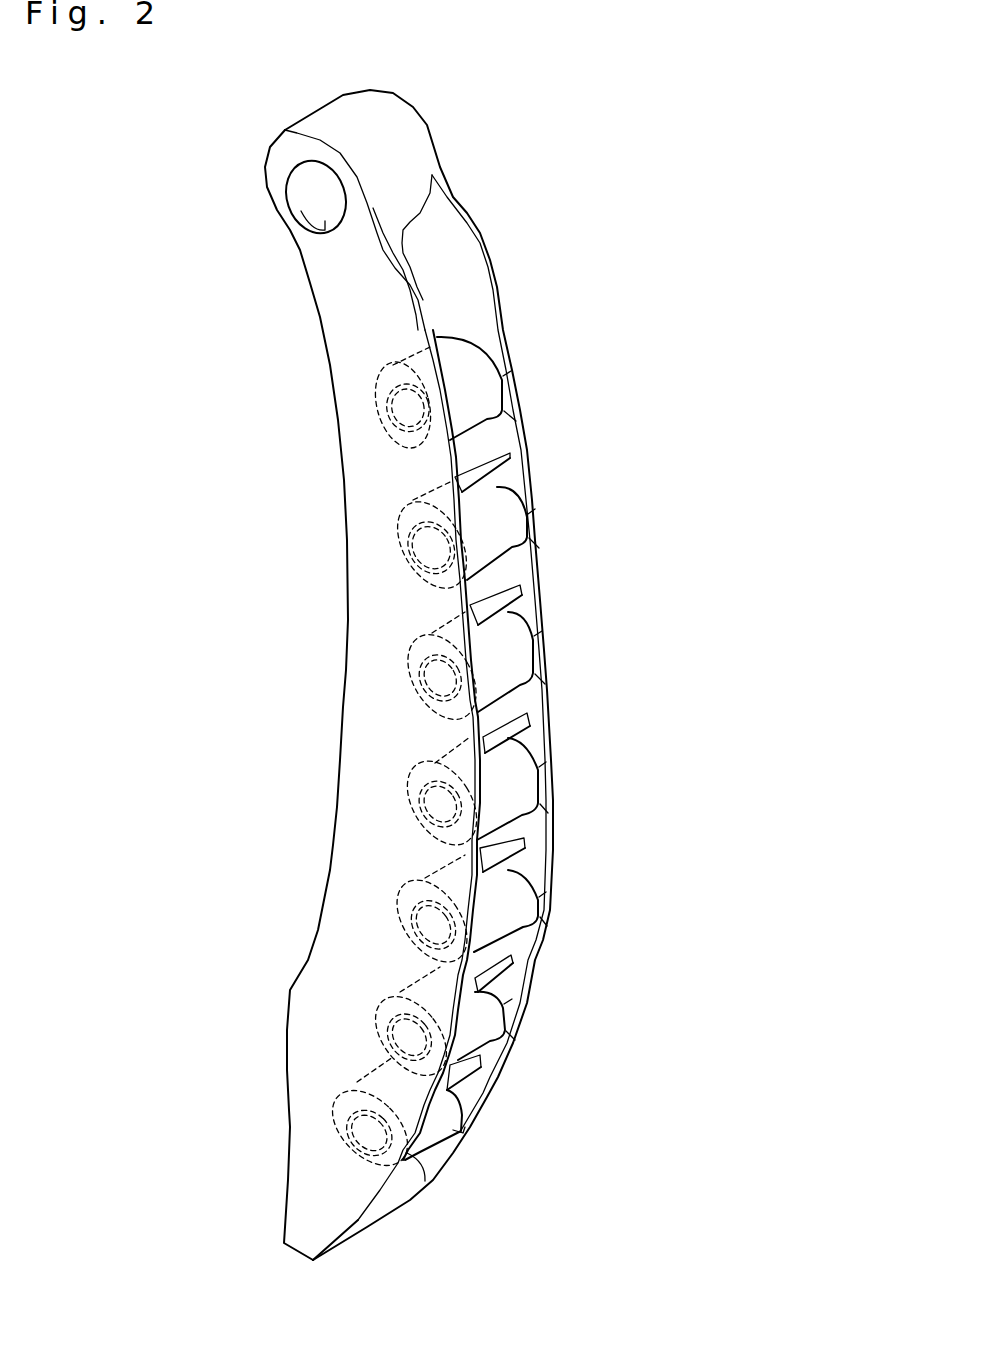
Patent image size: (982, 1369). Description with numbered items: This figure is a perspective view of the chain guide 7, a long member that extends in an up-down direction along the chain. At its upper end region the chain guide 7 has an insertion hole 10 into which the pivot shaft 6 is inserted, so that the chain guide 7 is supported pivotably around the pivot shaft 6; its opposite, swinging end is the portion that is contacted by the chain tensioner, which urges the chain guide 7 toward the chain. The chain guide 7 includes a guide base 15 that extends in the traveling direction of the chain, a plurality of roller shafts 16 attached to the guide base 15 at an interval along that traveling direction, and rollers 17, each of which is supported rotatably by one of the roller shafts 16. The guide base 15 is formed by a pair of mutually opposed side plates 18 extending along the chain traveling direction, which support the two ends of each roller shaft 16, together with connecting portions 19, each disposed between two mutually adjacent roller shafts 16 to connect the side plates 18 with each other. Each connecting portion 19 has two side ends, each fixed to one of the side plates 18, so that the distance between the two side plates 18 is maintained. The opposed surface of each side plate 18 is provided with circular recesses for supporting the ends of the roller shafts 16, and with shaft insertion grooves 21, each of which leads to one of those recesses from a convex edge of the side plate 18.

The chain guide 7 is at (424, 128).
The pivot shaft 6 is at (312, 187).
The insertion hole 10 is at (324, 231).
The guide base 15 is at (345, 352).
The roller shafts 16 is at (387, 423).
The rollers 17 is at (475, 363).
The side plates 18 is at (420, 299).
The connecting portions 19 is at (488, 458).
The shaft insertion grooves 21 is at (542, 784).